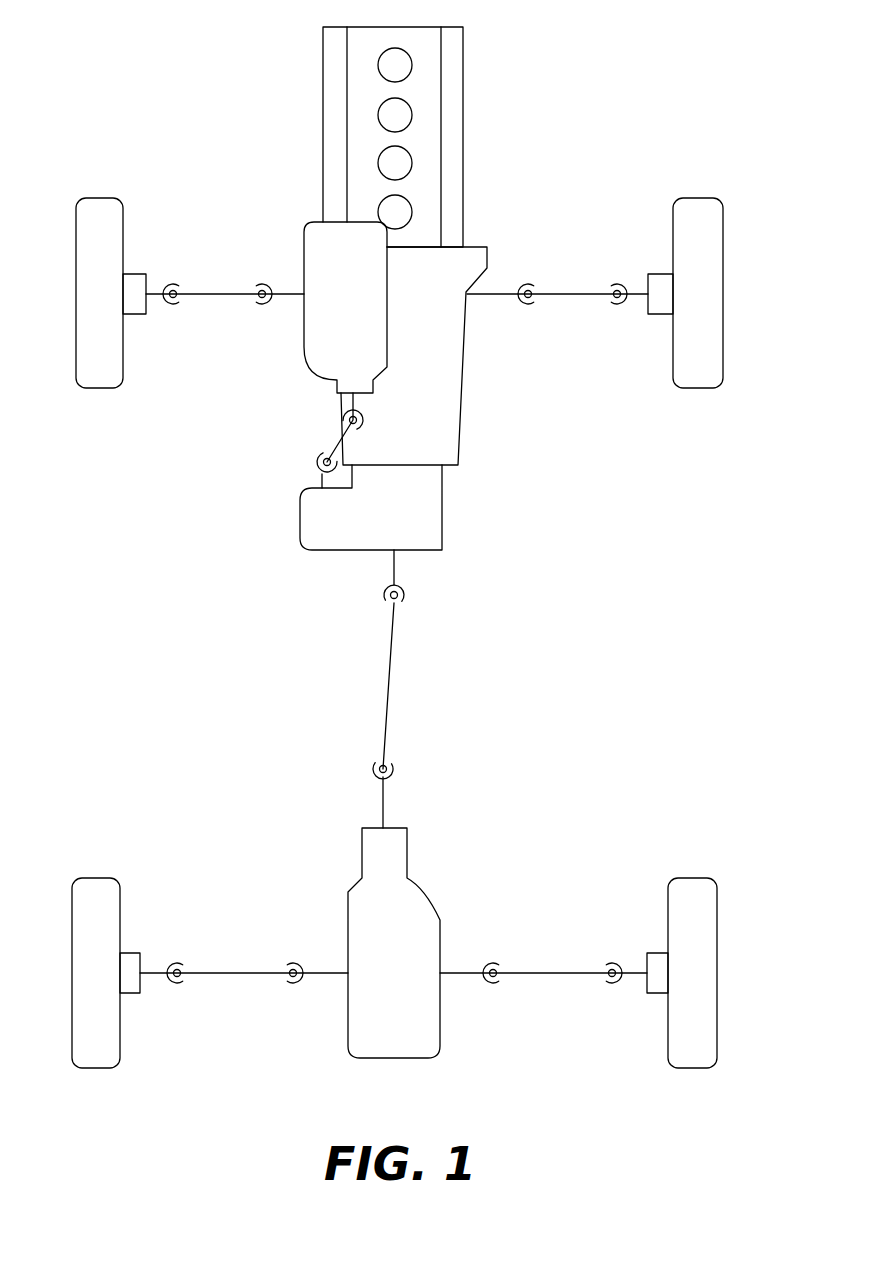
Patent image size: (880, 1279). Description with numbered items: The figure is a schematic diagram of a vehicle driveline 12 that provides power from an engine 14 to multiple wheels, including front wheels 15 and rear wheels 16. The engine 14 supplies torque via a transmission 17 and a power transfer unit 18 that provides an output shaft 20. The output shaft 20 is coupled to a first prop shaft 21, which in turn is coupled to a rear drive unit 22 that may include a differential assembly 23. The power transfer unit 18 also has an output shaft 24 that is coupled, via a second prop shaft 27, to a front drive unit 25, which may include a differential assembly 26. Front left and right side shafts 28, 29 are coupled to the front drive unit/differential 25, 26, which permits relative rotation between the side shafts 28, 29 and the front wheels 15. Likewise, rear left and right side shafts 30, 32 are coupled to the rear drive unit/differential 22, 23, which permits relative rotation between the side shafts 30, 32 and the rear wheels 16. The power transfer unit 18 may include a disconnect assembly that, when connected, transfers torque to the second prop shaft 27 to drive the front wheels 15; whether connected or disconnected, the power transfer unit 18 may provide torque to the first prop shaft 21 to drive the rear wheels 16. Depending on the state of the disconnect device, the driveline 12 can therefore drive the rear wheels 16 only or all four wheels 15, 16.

The vehicle driveline 12 is at (503, 635).
The engine 14 is at (463, 78).
The front wheels 15 is at (102, 198).
The rear wheels 16 is at (99, 878).
The transmission 17 is at (461, 358).
The power transfer unit 18 is at (442, 512).
The output shaft 20 is at (396, 564).
The first prop shaft 21 is at (392, 641).
The rear drive unit 22 is at (421, 974).
The differential assembly 23 is at (388, 1058).
The output shaft 24 is at (322, 480).
The second prop shaft 27 is at (343, 443).
The front drive unit 25 is at (287, 307).
The differential assembly 26 is at (304, 338).
The front left side shaft 28 is at (223, 282).
The front right side shaft 29 is at (573, 282).
The rear left side shaft 30 is at (237, 960).
The rear right side shaft 32 is at (557, 960).